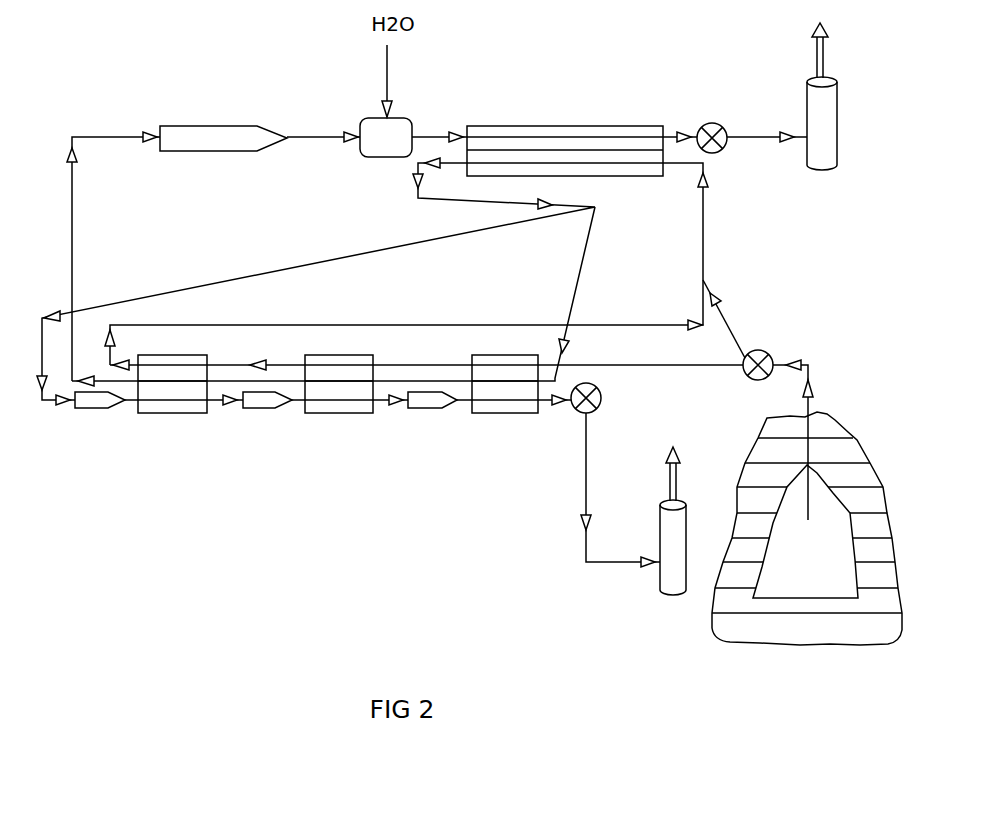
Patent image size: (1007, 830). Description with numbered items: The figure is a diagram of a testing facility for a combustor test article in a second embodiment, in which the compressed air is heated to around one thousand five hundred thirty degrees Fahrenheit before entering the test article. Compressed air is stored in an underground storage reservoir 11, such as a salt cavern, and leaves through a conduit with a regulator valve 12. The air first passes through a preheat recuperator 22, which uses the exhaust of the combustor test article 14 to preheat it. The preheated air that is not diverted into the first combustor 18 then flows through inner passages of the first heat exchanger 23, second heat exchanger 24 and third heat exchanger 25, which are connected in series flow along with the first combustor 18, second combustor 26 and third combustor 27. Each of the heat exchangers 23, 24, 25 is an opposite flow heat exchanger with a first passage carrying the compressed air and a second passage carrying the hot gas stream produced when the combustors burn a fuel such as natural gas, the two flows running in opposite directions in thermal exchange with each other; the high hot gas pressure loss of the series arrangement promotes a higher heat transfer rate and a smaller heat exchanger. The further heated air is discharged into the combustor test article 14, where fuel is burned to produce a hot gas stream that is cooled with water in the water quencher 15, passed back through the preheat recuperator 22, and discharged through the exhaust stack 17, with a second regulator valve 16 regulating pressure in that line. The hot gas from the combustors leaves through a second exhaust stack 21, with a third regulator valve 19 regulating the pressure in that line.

The compressed air storage reservoir 11 is at (822, 545).
The regulator valve 12 is at (760, 352).
The combustor test article 14 is at (212, 137).
The water quencher 15 is at (374, 130).
The second regulator valve 16 is at (711, 125).
The exhaust stack 17 is at (822, 118).
The first combustor 18 is at (93, 397).
The third regulator valve 19 is at (582, 407).
The second exhaust stack 21 is at (673, 567).
The preheat recuperator 22 is at (577, 142).
The first heat exchanger 23 is at (172, 390).
The second heat exchanger 24 is at (332, 388).
The third heat exchanger 25 is at (503, 388).
The second combustor 26 is at (260, 397).
The third combustor 27 is at (428, 397).